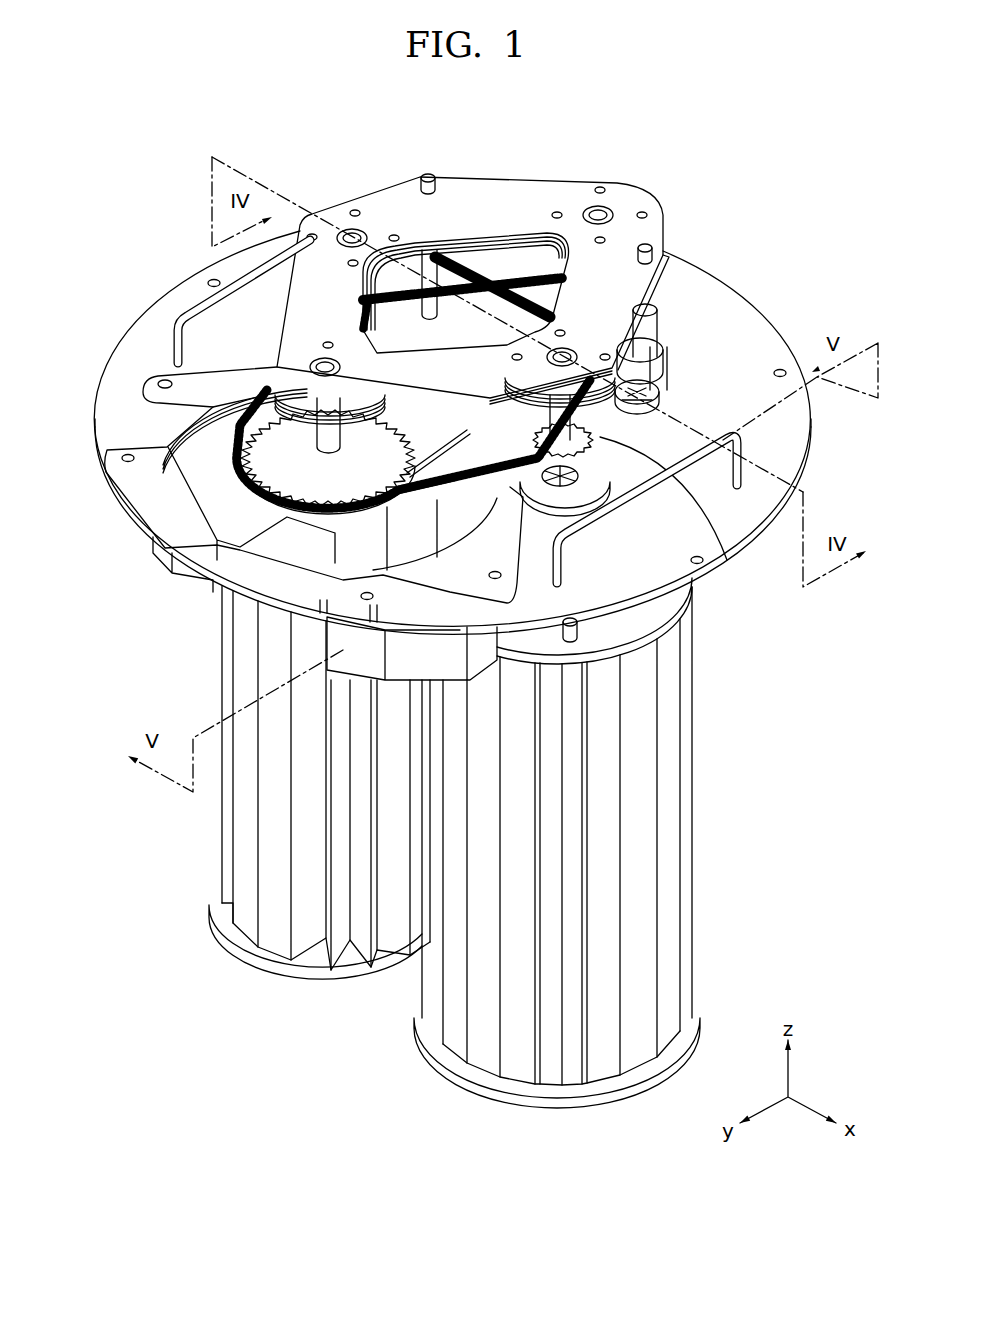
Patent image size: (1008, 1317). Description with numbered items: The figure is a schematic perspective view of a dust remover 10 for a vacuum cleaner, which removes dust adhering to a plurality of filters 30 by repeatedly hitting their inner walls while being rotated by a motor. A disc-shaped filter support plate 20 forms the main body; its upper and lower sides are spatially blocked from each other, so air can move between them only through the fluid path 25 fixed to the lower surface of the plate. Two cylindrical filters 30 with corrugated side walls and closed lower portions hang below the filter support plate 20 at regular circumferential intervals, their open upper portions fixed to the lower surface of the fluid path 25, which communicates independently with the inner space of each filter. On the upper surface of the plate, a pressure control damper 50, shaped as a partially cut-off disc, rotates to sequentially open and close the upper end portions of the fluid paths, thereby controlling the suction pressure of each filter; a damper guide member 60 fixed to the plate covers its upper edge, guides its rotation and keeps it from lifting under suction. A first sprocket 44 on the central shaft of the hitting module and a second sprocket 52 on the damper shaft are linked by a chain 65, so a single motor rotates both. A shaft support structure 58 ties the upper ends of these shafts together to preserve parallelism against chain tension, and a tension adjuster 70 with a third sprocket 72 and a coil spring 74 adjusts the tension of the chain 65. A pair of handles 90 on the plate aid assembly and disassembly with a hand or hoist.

The dust remover 10 is at (742, 182).
The filter support plate 20 is at (787, 435).
The fluid path 25 is at (343, 640).
The filters 30 is at (453, 1007).
The first sprocket 44 is at (368, 267).
The pressure control damper 50 is at (208, 470).
The second sprocket 52 is at (268, 445).
The shaft support structure 58 is at (627, 200).
The damper guide member 60 is at (155, 487).
The chain 65 is at (537, 277).
The tension adjuster 70 is at (667, 327).
The third sprocket 72 is at (657, 363).
The coil spring 74 is at (465, 277).
The handles 90 is at (197, 307).